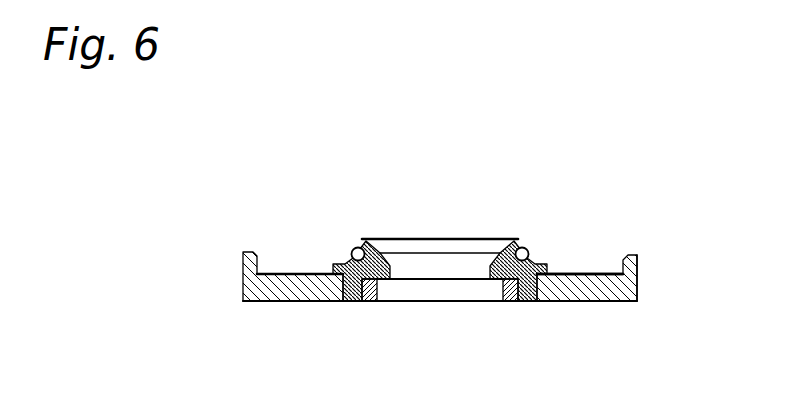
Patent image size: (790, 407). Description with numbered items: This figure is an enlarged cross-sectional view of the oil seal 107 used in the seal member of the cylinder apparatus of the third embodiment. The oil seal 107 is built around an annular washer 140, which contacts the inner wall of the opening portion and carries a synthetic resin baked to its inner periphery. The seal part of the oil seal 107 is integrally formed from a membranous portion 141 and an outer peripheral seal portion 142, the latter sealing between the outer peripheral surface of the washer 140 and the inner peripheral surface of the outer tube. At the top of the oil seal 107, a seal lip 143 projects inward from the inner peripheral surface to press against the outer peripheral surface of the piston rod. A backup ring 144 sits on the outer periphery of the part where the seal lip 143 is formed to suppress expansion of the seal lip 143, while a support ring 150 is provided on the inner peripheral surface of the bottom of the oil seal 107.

The oil seal 107 is at (666, 227).
The annular washer 140 is at (573, 302).
The membranous portion 141 is at (593, 273).
The outer peripheral seal portion 142 is at (638, 289).
The seal lip 143 is at (494, 253).
The backup ring 144 is at (351, 252).
The support ring 150 is at (496, 302).